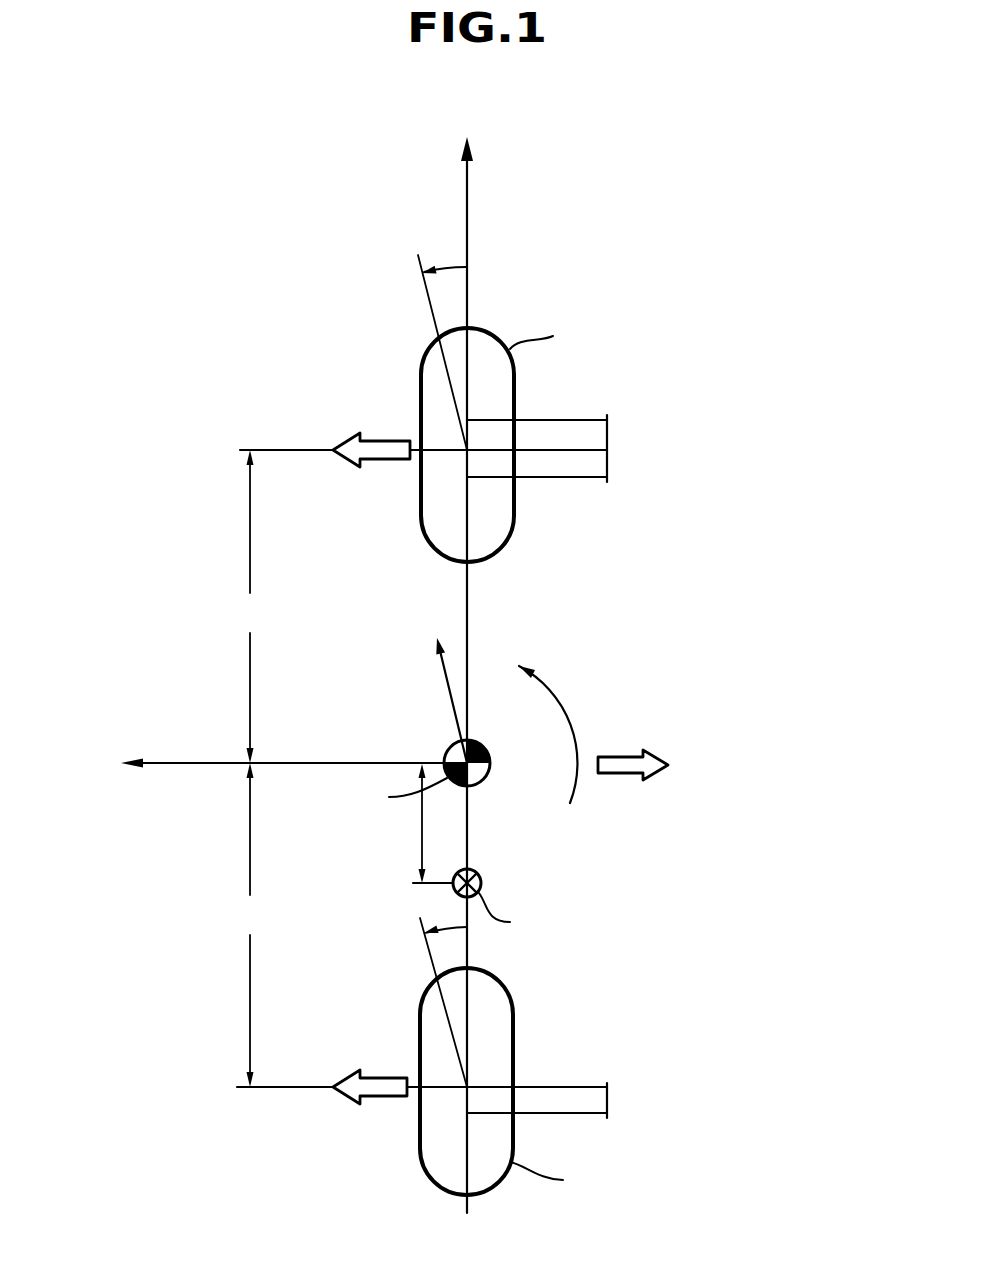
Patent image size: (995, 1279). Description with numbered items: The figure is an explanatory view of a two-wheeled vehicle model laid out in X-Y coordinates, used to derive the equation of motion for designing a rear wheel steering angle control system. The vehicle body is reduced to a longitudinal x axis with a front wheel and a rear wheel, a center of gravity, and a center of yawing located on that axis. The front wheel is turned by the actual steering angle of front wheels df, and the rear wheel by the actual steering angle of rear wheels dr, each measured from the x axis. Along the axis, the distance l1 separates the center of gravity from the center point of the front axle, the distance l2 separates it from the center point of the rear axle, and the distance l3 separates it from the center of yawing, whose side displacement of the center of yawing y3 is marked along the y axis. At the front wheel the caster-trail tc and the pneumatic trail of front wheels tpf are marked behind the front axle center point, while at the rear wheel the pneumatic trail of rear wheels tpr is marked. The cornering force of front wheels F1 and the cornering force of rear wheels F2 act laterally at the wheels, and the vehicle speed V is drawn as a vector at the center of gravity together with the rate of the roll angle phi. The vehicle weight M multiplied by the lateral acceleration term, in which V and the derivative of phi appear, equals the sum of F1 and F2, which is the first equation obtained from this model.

The cornering force of front wheels F1 is at (377, 433).
The cornering force of rear wheels F2 is at (378, 1106).
The caster-trail tc is at (550, 448).
The pneumatic trail of front wheels tpf is at (553, 465).
The pneumatic trail of rear wheels tpr is at (555, 1100).
The distance between the center of gravity and the center point of a front axle l1 is at (252, 606).
The distance between the center of gravity and the center point of a rear axle l2 is at (255, 925).
The distance between the center of gravity and the center of yawing l3 is at (430, 823).
The side displacement of the center of yawing y3 is at (418, 885).
The vehicle speed V is at (444, 700).
The roll angle phi is at (552, 734).
The vehicle weight M is at (687, 765).
The actual steering angle of front wheels df is at (442, 344).
The actual steering angle of rear wheels dr is at (443, 996).